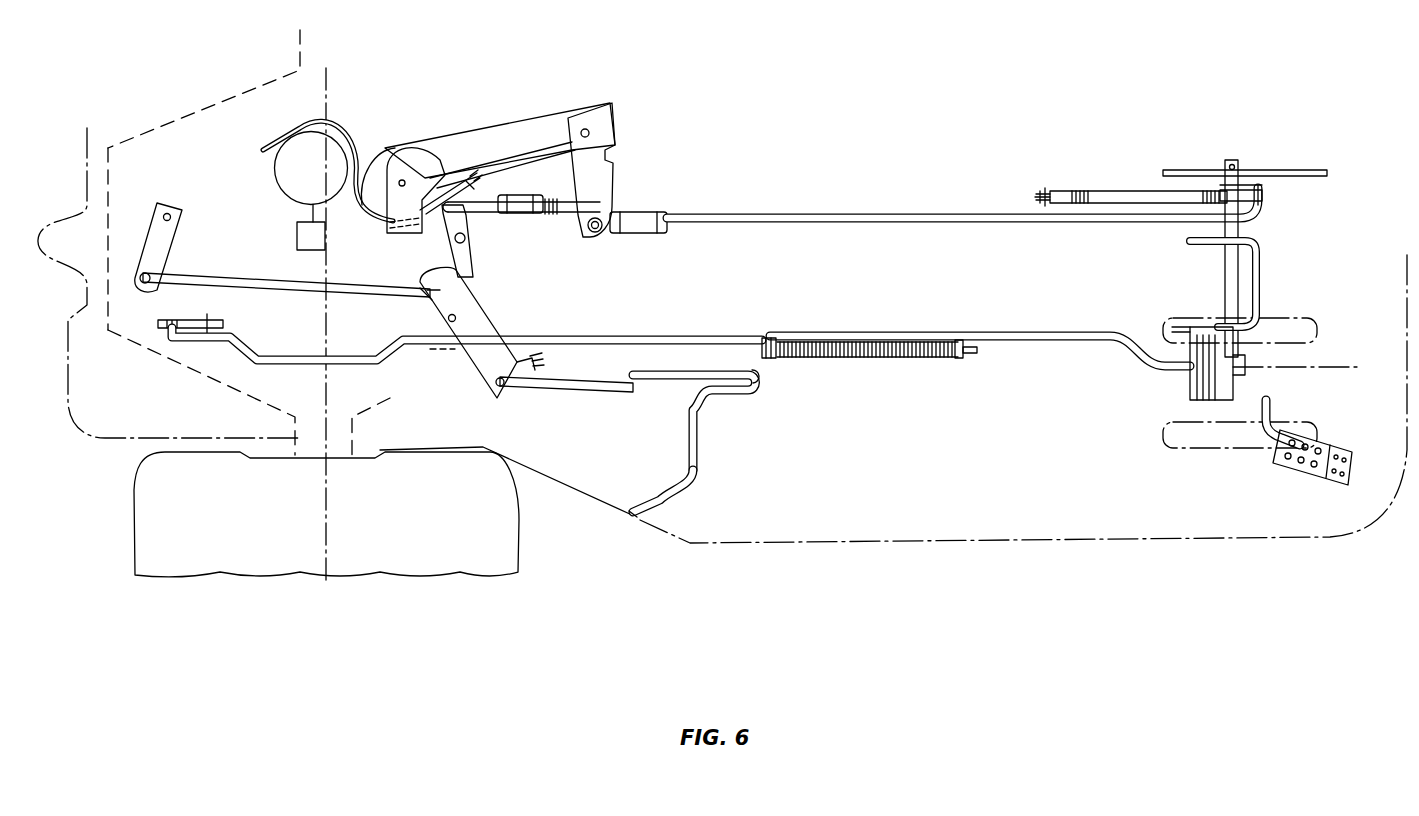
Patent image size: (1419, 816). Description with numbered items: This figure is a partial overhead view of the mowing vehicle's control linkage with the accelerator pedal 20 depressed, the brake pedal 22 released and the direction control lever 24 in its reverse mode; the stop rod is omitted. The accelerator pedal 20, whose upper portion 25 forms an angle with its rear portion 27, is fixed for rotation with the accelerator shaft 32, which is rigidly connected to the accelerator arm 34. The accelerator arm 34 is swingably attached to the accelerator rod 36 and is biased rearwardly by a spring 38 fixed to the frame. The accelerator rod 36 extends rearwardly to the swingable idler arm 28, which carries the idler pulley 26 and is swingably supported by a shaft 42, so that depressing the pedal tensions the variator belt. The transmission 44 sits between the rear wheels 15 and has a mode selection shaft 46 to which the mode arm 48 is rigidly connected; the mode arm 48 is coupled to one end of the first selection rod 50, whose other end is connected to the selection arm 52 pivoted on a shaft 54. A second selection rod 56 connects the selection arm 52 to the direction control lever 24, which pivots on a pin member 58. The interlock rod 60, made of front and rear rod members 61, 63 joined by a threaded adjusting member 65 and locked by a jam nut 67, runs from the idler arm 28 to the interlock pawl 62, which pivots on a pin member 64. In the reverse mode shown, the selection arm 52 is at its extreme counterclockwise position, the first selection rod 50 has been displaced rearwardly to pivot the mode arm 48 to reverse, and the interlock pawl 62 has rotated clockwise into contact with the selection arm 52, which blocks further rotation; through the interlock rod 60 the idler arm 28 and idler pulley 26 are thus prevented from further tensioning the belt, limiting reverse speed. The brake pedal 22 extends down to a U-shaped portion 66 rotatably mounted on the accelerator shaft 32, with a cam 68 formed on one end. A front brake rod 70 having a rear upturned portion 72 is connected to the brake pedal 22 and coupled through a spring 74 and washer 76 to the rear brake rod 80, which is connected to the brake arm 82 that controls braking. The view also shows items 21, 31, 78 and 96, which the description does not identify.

The rear wheel 15 is at (522, 538).
The accelerator pedal 20 is at (1297, 487).
The indicator 21 is at (314, 180).
The brake pedal 22 is at (1190, 386).
The direction control lever 24 is at (655, 503).
The upper portion 25 is at (1340, 445).
The idler pulley 26 is at (372, 160).
The rear portion 27 is at (1277, 462).
The idler arm 28 is at (512, 122).
The cable 31 is at (285, 138).
The accelerator shaft 32 is at (1224, 280).
The accelerator arm 34 is at (1262, 195).
The accelerator rod 36 is at (820, 212).
The spring 38 is at (1090, 190).
The shaft 42 is at (588, 128).
The transmission 44 is at (210, 112).
The mode selection shaft 46 is at (170, 210).
The mode arm 48 is at (150, 228).
The first selection rod 50 is at (230, 273).
The selection arm 52 is at (482, 328).
The shaft 54 is at (446, 318).
The second selection rod 56 is at (586, 393).
The pin member 58 is at (700, 418).
The interlock rod 60 is at (543, 230).
The front rod member 61 is at (600, 195).
The interlock pawl 62 is at (475, 260).
The rear rod member 63 is at (492, 166).
The pin member 64 is at (452, 232).
The adjusting member 65 is at (532, 195).
The U-shaped portion 66 is at (1260, 272).
The jam nut 67 is at (563, 158).
The cam 68 is at (1190, 241).
The front brake rod 70 is at (1038, 345).
The rear upturned portion 72 is at (777, 358).
The spring 74 is at (890, 360).
The washer 76 is at (958, 359).
The rod end 78 is at (968, 356).
The rear brake rod 80 is at (320, 368).
The brake arm 82 is at (225, 318).
The clip 96 is at (532, 385).